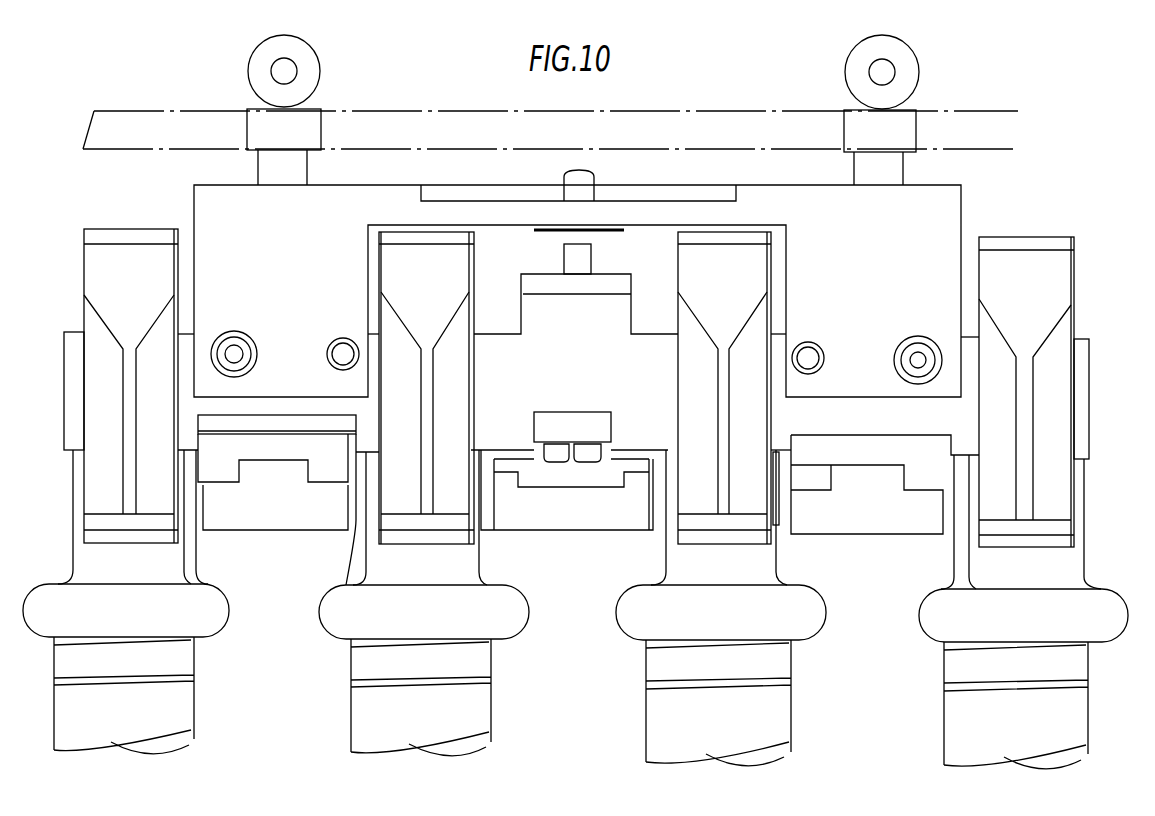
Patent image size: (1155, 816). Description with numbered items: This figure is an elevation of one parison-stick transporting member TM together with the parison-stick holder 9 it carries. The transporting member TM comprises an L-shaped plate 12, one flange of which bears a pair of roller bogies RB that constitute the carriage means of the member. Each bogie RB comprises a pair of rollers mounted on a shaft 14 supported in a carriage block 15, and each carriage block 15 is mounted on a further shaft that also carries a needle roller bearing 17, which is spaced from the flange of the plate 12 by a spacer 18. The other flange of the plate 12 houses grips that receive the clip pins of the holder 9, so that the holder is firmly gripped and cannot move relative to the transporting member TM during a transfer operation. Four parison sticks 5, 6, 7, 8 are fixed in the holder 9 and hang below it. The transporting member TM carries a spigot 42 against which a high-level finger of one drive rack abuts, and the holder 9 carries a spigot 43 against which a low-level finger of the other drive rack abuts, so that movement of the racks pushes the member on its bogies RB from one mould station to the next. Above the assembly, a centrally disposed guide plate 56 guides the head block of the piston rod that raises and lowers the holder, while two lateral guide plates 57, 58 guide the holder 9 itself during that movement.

The parison stick 5 is at (1095, 620).
The parison stick 6 is at (805, 618).
The parison stick 7 is at (505, 615).
The parison stick 8 is at (207, 613).
The holder 9 is at (75, 337).
The L-shaped plate 12 is at (576, 313).
The shaft 14 is at (292, 70).
The carriage block 15 is at (250, 98).
The needle roller bearing 17 is at (581, 130).
The spacer 18 is at (270, 166).
The spigot 42 is at (573, 183).
The spigot 43 is at (572, 262).
The guide plate 56 is at (558, 513).
The lateral guide plate 57 is at (262, 517).
The lateral guide plate 58 is at (888, 517).
The roller bogie RB is at (322, 117).
The parison-stick transporting member TM is at (170, 210).